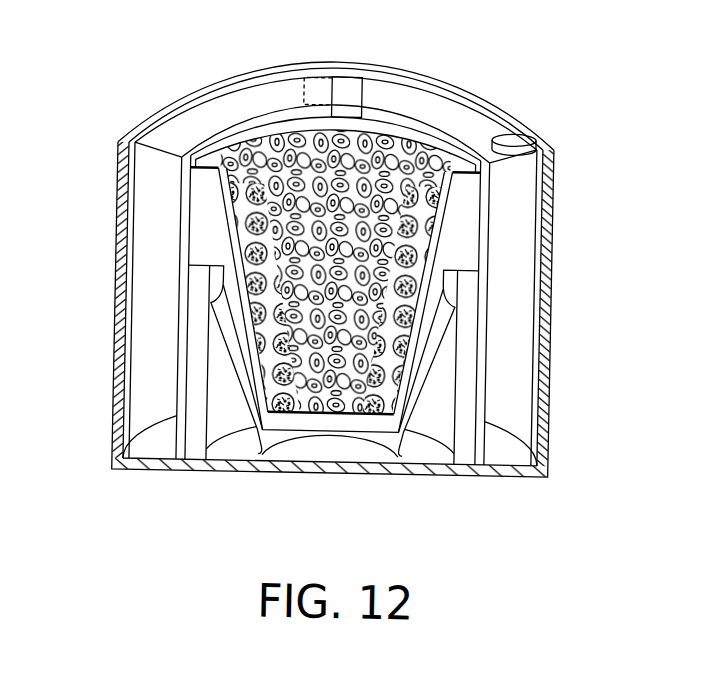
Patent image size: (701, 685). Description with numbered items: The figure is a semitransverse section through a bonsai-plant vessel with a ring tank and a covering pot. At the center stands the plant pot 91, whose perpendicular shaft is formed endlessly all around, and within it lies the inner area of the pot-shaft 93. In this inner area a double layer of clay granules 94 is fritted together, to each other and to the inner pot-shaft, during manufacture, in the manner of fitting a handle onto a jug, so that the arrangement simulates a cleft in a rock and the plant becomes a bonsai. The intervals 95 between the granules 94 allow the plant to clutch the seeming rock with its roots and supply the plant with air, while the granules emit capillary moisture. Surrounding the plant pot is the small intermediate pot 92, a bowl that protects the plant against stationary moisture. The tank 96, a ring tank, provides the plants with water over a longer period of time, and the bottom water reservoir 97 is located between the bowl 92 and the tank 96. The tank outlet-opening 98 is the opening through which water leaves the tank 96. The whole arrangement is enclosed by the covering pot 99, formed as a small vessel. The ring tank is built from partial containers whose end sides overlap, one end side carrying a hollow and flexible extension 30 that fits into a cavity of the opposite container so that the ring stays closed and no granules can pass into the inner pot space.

The hollow and flexible extension 30 is at (341, 95).
The plant pot 91 is at (458, 438).
The intermediate pot 92 is at (265, 454).
The pot-shaft 93 is at (440, 165).
The clay granules 94 is at (250, 151).
The intervals 95 is at (404, 156).
The tank 96 is at (517, 421).
The bottom water reservoir 97 is at (225, 454).
The tank outlet-opening 98 is at (115, 434).
The covering pot 99 is at (550, 269).